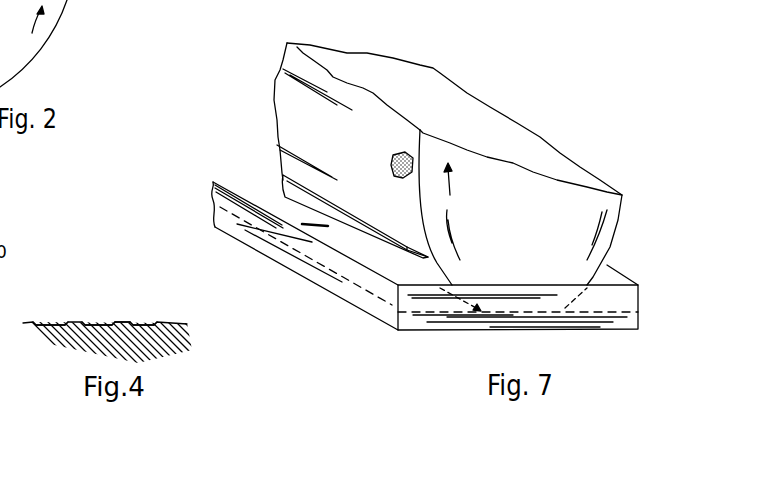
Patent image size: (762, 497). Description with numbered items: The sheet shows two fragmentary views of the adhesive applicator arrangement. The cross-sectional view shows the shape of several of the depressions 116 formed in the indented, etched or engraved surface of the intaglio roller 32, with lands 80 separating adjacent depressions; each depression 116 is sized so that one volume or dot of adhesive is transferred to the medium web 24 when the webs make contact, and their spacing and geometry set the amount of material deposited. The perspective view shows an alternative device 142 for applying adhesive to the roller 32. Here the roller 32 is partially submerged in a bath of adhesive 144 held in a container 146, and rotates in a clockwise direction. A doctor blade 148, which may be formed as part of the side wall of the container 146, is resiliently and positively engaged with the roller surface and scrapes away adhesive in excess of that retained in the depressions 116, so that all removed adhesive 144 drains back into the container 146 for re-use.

In FIG. 2, the intaglio roller 32 is at (58, 50).
In FIG. 7, the intaglio roller 32 is at (608, 243).
In FIG. 4, the second medium web 24 is at (172, 340).
In FIG. 4, the depressions 116 is at (88, 321).
In FIG. 4, the land between grooves 80 is at (123, 321).
In FIG. 7, the device for applying adhesive 142 is at (668, 355).
In FIG. 7, the bath of adhesive 144 is at (425, 318).
In FIG. 7, the container 146 is at (617, 298).
In FIG. 7, the doctor blade 148 is at (403, 237).